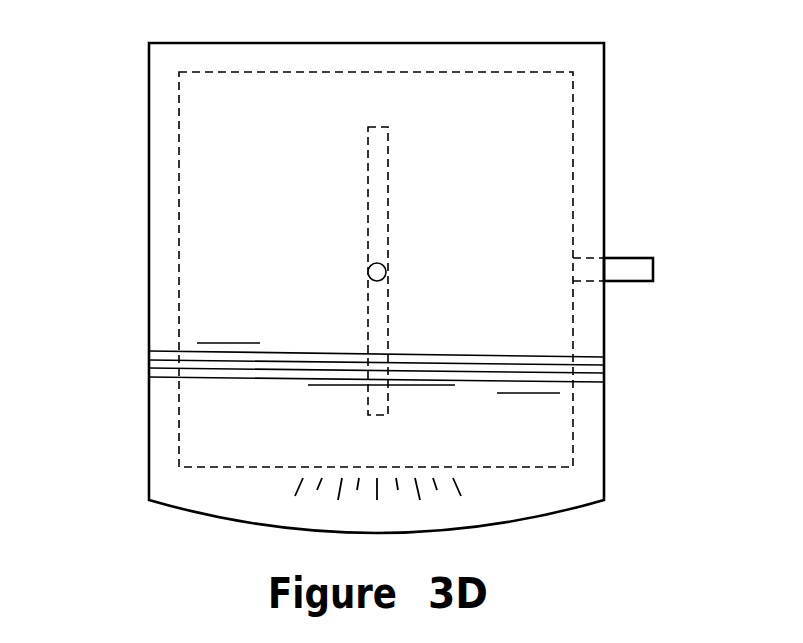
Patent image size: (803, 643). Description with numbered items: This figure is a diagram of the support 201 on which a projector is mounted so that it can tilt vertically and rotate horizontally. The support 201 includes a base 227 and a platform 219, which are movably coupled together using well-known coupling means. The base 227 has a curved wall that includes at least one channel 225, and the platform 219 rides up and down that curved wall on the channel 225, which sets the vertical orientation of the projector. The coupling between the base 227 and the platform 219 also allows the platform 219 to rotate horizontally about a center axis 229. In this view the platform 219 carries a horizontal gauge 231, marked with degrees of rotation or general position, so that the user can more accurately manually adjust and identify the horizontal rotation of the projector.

The support 201 is at (640, 97).
The platform 219 is at (149, 272).
The base 227 is at (179, 160).
The channel 225 is at (368, 178).
The center axis 229 is at (368, 273).
The horizontal gauge 231 is at (294, 483).